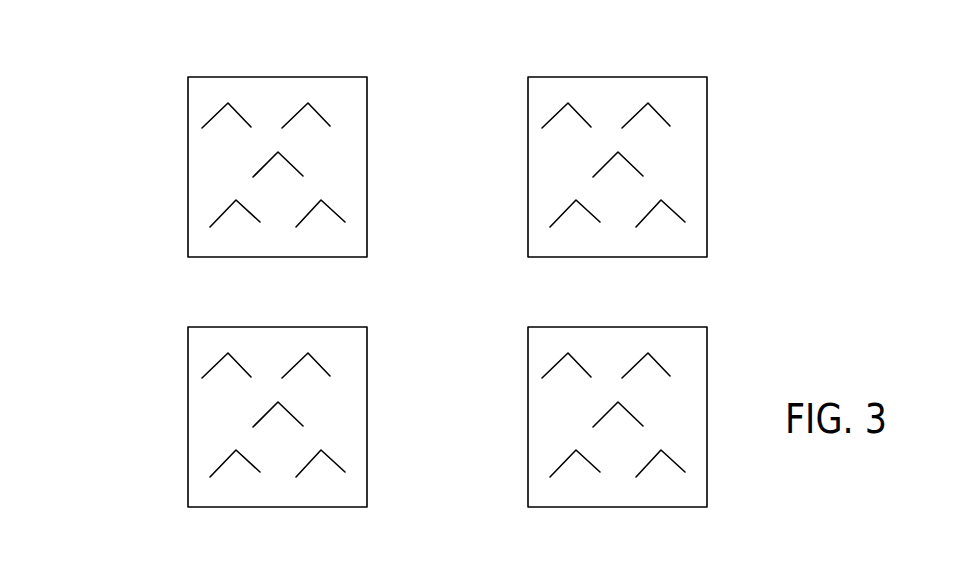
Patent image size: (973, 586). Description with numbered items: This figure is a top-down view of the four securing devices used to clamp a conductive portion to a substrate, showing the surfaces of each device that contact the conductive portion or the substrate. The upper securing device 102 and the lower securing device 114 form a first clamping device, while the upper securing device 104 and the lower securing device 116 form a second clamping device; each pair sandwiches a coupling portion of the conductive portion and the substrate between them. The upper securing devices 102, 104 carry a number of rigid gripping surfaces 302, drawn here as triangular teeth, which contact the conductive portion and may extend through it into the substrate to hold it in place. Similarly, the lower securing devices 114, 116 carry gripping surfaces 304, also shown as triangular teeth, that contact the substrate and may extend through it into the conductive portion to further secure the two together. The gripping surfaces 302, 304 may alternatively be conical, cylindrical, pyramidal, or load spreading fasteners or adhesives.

The upper securing device 102 is at (188, 152).
The upper securing device 104 is at (528, 163).
The lower securing device 114 is at (188, 405).
The lower securing device 116 is at (528, 392).
The rigid gripping surfaces 302 is at (312, 107).
The gripping surfaces 304 is at (317, 362).